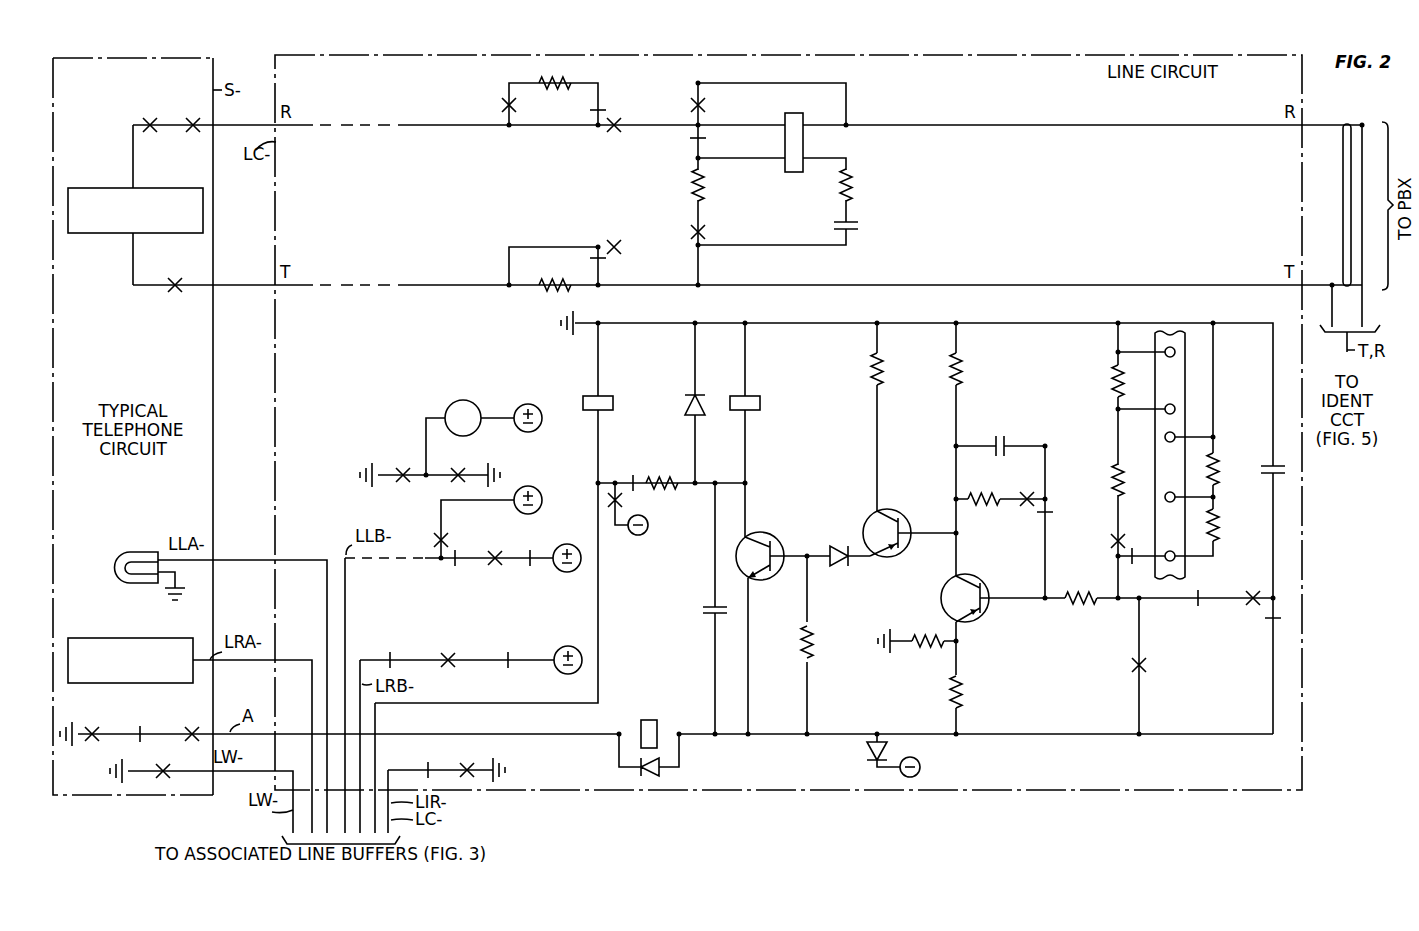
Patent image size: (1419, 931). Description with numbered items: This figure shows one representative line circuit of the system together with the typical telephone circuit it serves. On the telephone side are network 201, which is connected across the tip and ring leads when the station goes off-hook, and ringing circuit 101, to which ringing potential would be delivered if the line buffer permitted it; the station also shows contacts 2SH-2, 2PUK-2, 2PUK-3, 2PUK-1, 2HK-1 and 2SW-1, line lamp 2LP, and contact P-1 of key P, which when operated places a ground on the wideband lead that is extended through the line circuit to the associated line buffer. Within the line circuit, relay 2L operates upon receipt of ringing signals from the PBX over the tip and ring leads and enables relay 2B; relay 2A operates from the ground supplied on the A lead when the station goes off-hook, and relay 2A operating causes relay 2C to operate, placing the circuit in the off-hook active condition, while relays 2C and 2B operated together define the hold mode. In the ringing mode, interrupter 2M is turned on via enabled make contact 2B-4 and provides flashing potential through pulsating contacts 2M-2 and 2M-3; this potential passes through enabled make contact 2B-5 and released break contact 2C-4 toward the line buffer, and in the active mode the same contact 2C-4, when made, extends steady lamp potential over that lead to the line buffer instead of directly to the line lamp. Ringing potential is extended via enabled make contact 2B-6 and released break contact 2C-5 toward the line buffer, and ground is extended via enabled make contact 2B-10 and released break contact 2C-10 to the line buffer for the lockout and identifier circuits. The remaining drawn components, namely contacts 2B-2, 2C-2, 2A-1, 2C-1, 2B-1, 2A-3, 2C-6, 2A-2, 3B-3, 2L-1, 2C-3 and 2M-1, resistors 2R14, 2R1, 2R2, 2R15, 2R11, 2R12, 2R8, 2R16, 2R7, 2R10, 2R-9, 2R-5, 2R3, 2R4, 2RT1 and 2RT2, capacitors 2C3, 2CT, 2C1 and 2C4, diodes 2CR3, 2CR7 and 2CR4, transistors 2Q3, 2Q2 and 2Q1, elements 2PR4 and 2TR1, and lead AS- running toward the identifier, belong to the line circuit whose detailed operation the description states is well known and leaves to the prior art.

The network 201 is at (100, 186).
The ringing circuit 101 is at (112, 634).
The switchhook contact 2SH-2 is at (147, 121).
The pickup key contact 2PUK-2 is at (191, 118).
The pickup key contact 2PUK-3 is at (170, 297).
The pickup key contact 2PUK-1 is at (188, 728).
The hold key contact 2HK-1 is at (136, 728).
The switch contact 2SW-1 is at (96, 743).
The contact P-1 is at (163, 759).
The lamp 2LP is at (149, 565).
The relay B contact 2B-2 is at (485, 106).
The resistor 2R14 is at (562, 80).
The relay C contact 2C-2 is at (614, 120).
The relay A contact 2A-1 is at (684, 142).
The relay 2L is at (792, 131).
The resistor 2R1 is at (716, 185).
The resistor 2R2 is at (865, 185).
The capacitor 2C3 is at (867, 229).
The relay C contact 2C-1 is at (690, 235).
The relay B contact 2B-1 is at (612, 254).
The resistor 2R15 is at (552, 292).
The AS lead switch AS- is at (1347, 121).
The capacitor 2CT is at (1260, 466).
The relay 2C is at (507, 513).
The diode 2CR3 is at (688, 405).
The relay 2B is at (757, 430).
The resistor 2R11 is at (665, 472).
The relay A contact 2A-3 is at (635, 498).
The transistor 2Q3 is at (763, 538).
The resistor 2R12 is at (813, 648).
The diode 2CR7 is at (836, 562).
The transistor 2Q2 is at (885, 513).
The resistor 2R8 is at (895, 417).
The resistor 2R16 is at (980, 449).
The capacitor 2C1 is at (1000, 434).
The resistor 2R7 is at (1000, 487).
The relay C contact 2C-6 is at (1028, 504).
The transistor 2Q1 is at (976, 585).
The resistor 2R10 is at (922, 634).
The resistor 2R-9 is at (977, 705).
The relay 2A is at (649, 736).
The capacitor 2C4 is at (696, 608).
The diode 2CR4 is at (859, 750).
The power source 2PR4 is at (933, 767).
The resistor 2R-5 is at (1080, 610).
The relay A contact 2A-2 is at (1194, 609).
The relay B contact 3B-3 is at (1256, 606).
The line relay contact 2L-1 is at (1159, 666).
The resistor 2R3 is at (1099, 381).
The resistor 2R4 is at (1099, 480).
The relay C contact 2C-3 is at (1110, 543).
The timer 2TR1 is at (1176, 355).
The resistor 2RT1 is at (1222, 473).
The resistor 2RT2 is at (1236, 525).
The interrupter 2M is at (470, 437).
The relay M contact 2M-1 is at (401, 464).
The make contact 2B-4 is at (454, 466).
The contact 2C-4 is at (450, 540).
The make contact 2B-5 is at (492, 568).
The pulsating contact 2M-2 is at (530, 565).
The break contact 2C-5 is at (388, 654).
The make contact 2B-6 is at (448, 652).
The pulsating contact 2M-3 is at (508, 666).
The break contact 2C-10 is at (428, 764).
The make contact 2B-10 is at (467, 762).